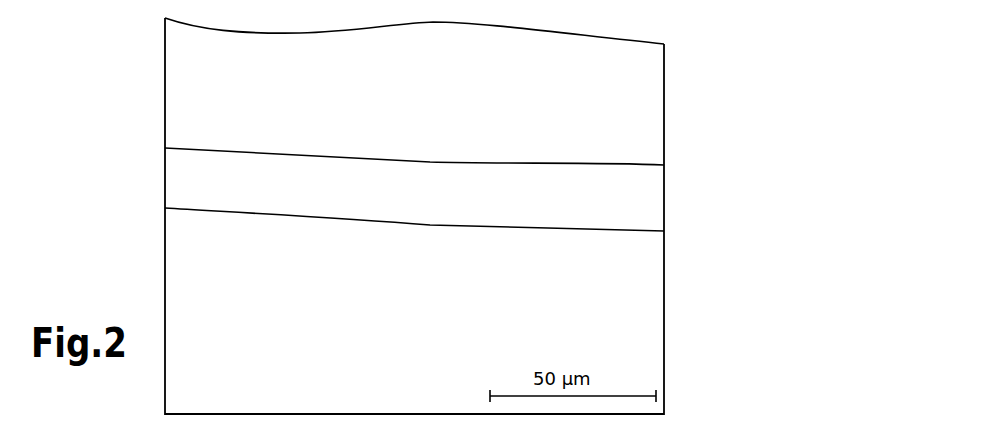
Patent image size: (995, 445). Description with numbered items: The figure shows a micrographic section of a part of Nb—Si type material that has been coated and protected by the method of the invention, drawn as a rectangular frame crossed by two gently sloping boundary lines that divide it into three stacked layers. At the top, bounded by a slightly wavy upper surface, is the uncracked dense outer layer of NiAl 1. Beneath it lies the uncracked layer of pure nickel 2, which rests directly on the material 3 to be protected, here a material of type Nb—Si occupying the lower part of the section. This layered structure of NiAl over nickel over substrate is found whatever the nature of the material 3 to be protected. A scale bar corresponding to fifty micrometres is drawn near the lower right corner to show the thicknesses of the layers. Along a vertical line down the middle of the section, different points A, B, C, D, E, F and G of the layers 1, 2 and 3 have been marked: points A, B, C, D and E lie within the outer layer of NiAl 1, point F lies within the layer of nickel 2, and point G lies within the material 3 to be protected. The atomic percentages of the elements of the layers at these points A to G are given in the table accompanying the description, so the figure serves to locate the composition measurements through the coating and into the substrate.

The outer layer of NiAl 1 is at (227, 86).
The layer of nickel 2 is at (229, 186).
The material to be protected 3 is at (231, 276).
The point A is at (430, 41).
The point B is at (430, 68).
The point C is at (430, 96).
The point D is at (430, 123).
The point E is at (430, 151).
The point F is at (430, 186).
The point G is at (430, 297).